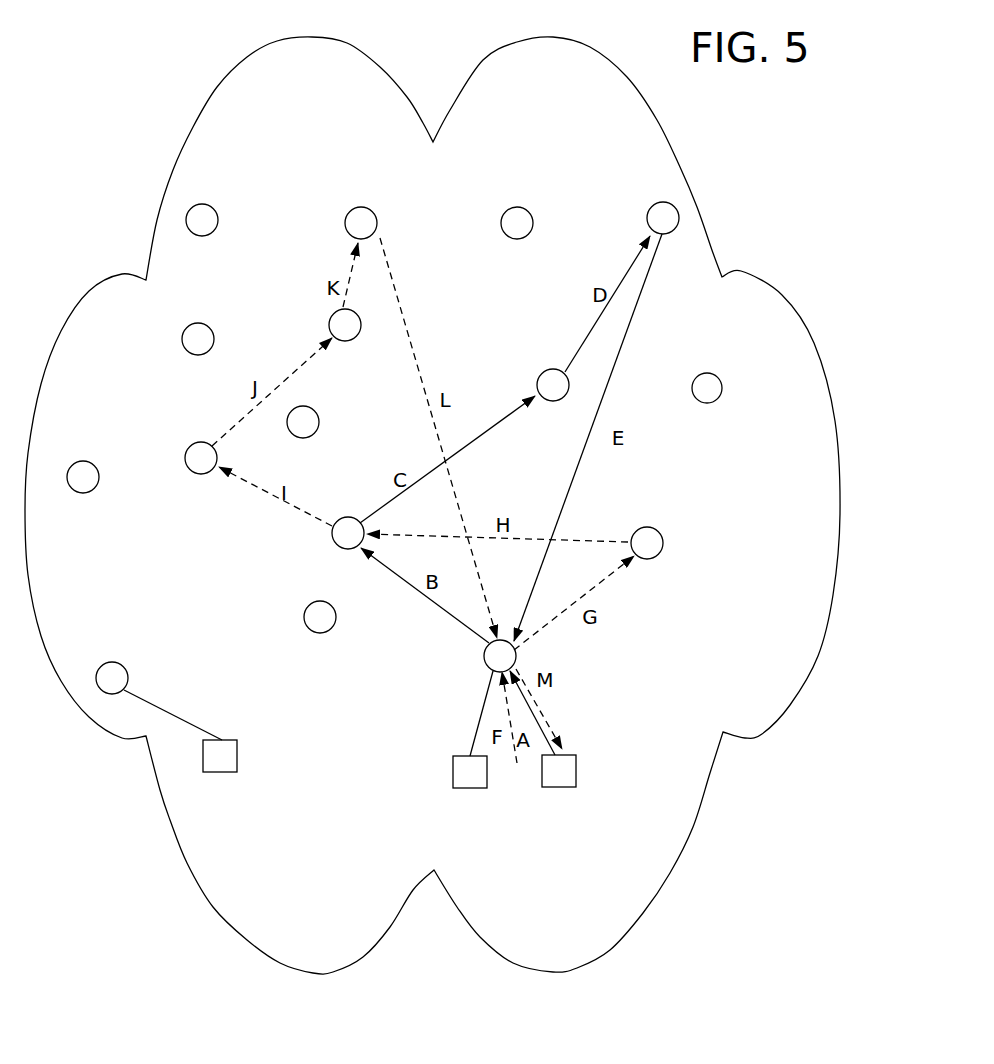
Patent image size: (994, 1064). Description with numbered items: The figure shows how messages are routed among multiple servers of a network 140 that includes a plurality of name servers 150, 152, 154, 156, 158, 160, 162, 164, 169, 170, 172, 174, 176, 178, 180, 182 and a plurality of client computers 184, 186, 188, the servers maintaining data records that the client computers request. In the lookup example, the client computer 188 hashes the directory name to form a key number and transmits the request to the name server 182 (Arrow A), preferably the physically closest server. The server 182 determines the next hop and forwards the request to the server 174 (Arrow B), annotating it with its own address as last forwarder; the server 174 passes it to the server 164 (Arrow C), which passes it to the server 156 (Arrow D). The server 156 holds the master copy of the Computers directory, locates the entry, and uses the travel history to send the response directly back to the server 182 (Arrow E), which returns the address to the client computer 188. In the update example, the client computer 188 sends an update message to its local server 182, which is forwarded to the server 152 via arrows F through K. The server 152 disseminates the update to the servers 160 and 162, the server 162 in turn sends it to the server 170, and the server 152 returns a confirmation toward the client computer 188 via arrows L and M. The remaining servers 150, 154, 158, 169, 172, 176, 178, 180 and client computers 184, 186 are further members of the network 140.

The network 140 is at (180, 940).
The server 150 is at (207, 204).
The server 152 is at (361, 207).
The server 154 is at (518, 207).
The server 156 is at (647, 219).
The server 158 is at (700, 373).
The server 160 is at (206, 323).
The server 162 is at (329, 323).
The server 164 is at (547, 371).
The server 169 is at (87, 461).
The server 170 is at (205, 475).
The server 172 is at (307, 406).
The server 174 is at (345, 517).
The server 176 is at (650, 527).
The server 178 is at (115, 662).
The server 180 is at (320, 633).
The server 182 is at (484, 658).
The client computer 184 is at (219, 772).
The client computer 186 is at (470, 788).
The client computer 188 is at (548, 787).